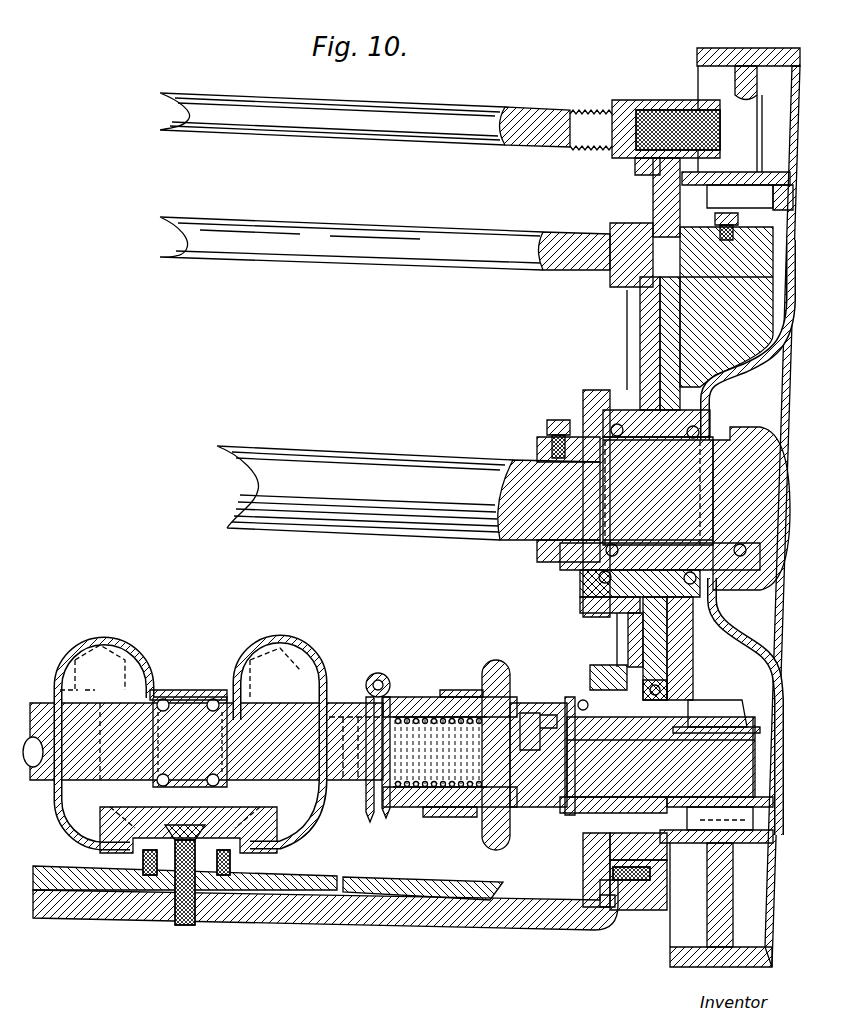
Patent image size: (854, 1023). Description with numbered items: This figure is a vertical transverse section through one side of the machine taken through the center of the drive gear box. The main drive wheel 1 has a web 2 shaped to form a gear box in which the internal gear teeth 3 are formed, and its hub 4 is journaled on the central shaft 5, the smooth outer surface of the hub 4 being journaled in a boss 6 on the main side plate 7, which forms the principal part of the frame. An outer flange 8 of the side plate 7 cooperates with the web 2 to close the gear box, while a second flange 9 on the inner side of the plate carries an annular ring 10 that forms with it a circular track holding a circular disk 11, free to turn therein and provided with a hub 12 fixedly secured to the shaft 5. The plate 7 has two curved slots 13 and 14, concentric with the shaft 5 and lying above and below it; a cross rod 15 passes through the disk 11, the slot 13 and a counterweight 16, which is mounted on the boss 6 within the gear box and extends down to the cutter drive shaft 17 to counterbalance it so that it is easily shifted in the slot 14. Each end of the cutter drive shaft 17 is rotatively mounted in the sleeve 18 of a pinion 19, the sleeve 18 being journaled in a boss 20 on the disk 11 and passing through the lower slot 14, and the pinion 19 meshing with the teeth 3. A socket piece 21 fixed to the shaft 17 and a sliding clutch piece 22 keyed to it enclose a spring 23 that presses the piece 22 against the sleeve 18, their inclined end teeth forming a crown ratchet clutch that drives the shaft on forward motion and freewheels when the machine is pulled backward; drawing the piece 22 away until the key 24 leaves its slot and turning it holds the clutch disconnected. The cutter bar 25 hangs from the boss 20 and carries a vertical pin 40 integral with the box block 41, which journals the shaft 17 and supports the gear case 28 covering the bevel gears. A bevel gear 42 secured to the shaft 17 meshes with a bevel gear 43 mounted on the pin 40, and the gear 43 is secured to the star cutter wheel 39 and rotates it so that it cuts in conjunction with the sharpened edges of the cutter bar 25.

The main drive wheel 1 is at (769, 53).
The web 2 is at (755, 369).
The internal gear teeth 3 is at (697, 854).
The hub 4 is at (729, 436).
The central shaft 5 is at (340, 477).
The boss 6 is at (625, 403).
The main side plate 7 is at (660, 316).
The outer flange 8 is at (733, 165).
The second flange 9 is at (655, 104).
The annular ring 10 is at (636, 165).
The circular disk 11 is at (650, 184).
The hub 12 is at (590, 395).
The slot 13 is at (678, 234).
The slot 14 is at (668, 688).
The cross rod 15 is at (530, 248).
The counterweight 16 is at (764, 303).
The cutter drive shaft 17 is at (543, 784).
The sleeve 18 is at (568, 712).
The pinion 19 is at (720, 753).
The boss 20 is at (586, 699).
The socket piece 21 is at (358, 800).
The sliding clutch piece 22 is at (453, 815).
The spring 23 is at (443, 796).
The key 24 is at (540, 709).
The cutter bar 25 is at (283, 918).
The gear case 28 is at (208, 680).
The cutter wheel 39 is at (52, 866).
The vertical pin 40 is at (167, 886).
The box block 41 is at (165, 678).
The bevel gear 42 is at (302, 649).
The bevel gear 43 is at (110, 808).